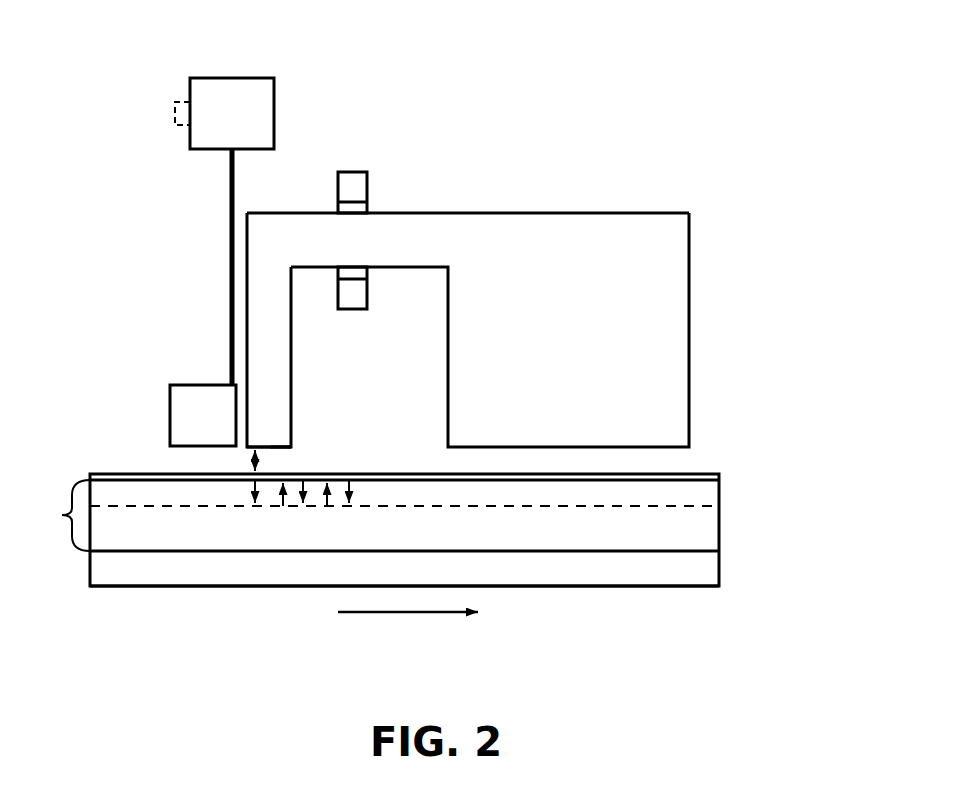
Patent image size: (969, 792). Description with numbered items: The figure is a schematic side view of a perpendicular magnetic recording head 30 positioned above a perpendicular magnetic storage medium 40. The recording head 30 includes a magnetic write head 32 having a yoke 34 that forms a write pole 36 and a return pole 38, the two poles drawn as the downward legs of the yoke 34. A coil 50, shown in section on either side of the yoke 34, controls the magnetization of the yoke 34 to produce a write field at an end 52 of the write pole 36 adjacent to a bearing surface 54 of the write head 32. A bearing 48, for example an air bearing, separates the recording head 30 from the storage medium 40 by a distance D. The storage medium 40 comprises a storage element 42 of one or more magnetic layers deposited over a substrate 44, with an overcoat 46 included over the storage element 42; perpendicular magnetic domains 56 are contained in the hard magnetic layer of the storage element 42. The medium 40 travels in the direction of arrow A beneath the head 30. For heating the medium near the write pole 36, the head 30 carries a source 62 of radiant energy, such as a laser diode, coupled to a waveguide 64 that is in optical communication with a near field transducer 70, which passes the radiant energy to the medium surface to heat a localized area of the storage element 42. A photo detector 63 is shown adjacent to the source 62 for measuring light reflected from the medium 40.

The perpendicular magnetic recording head 30 is at (752, 231).
The magnetic write head 32 is at (532, 180).
The yoke 34 is at (442, 222).
The write pole 36 is at (283, 362).
The return pole 38 is at (689, 355).
The perpendicular magnetic storage medium 40 is at (652, 604).
The storage element 42 is at (62, 515).
The substrate 44 is at (719, 563).
The overcoat 46 is at (702, 472).
The bearing 48 is at (205, 460).
The coil 50 is at (368, 180).
The end of the write pole 52 is at (267, 447).
The bearing surface 54 is at (284, 447).
The perpendicular magnetic domains 56 is at (285, 497).
The source of radiant energy 62 is at (274, 113).
The photo detector 63 is at (161, 106).
The waveguide 64 is at (233, 182).
The near field transducer 70 is at (156, 406).
The distance D is at (257, 462).
The arrow A is at (370, 612).